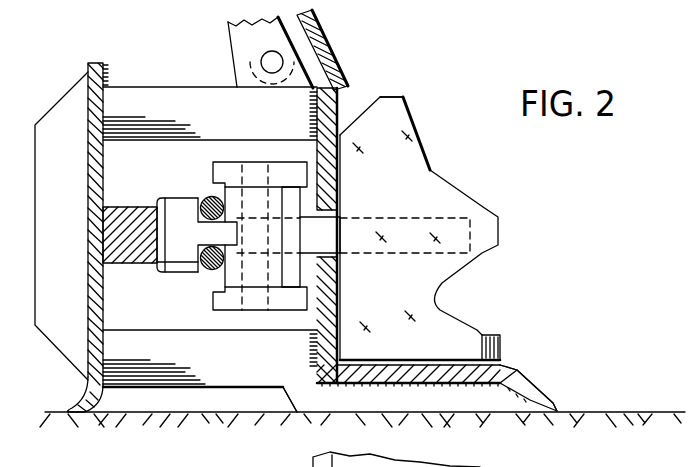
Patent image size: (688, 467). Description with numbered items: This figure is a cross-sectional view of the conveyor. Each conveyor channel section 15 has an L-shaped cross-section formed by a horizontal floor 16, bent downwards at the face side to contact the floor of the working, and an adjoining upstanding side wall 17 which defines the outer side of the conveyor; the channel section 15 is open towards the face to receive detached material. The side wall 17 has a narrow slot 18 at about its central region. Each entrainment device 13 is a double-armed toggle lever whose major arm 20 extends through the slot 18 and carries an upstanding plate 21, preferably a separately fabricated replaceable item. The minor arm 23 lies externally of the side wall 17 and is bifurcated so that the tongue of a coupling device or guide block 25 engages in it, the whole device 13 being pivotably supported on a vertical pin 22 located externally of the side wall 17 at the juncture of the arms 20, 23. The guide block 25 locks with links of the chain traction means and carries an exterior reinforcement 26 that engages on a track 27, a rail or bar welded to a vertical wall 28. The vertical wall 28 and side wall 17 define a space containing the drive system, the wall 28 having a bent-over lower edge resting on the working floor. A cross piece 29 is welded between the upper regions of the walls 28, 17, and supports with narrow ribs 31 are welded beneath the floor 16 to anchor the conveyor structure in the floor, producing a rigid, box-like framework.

The entrainment device 13 is at (482, 185).
The conveyor channel section 15 is at (330, 376).
The horizontal floor 16 is at (455, 375).
The upstanding side wall 17 is at (340, 94).
The slot 18 is at (340, 208).
The major arm 20 is at (328, 230).
The upstanding plate 21 is at (407, 160).
The vertical pin 22 is at (255, 193).
The minor arm 23 is at (218, 175).
The guide block 25 is at (195, 244).
The exterior reinforcement 26 is at (161, 268).
The track 27 is at (124, 215).
The vertical wall 28 is at (94, 160).
The cross piece 29 is at (178, 100).
The rib 31 is at (310, 398).